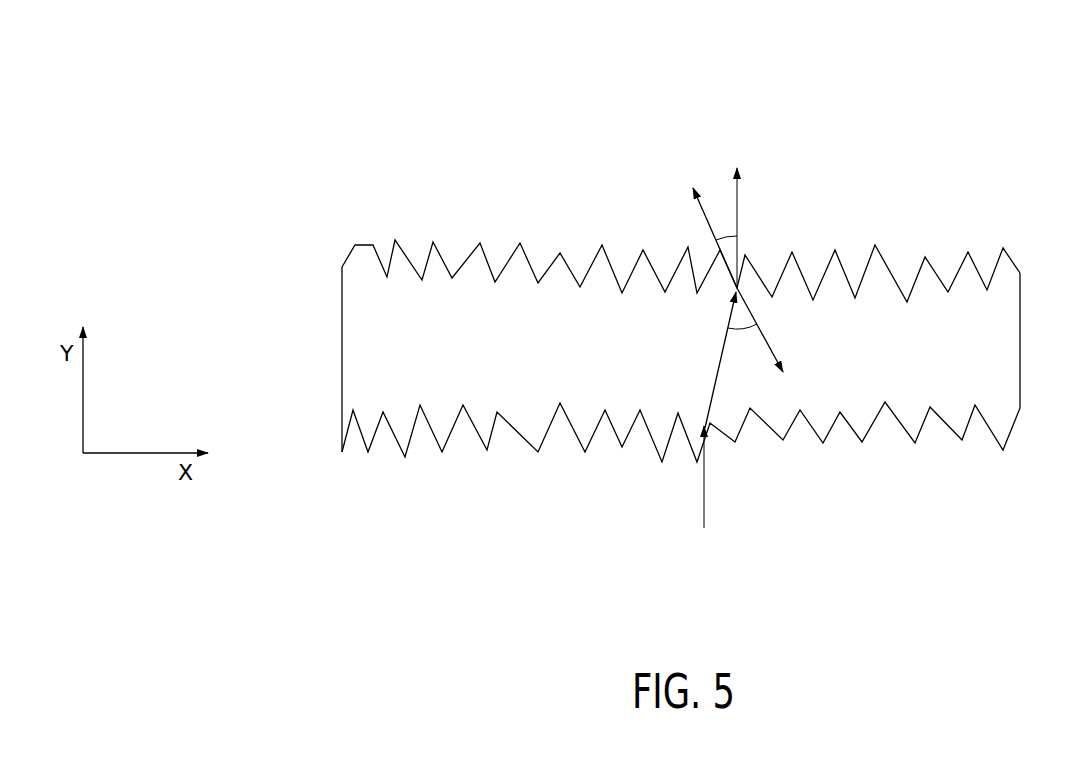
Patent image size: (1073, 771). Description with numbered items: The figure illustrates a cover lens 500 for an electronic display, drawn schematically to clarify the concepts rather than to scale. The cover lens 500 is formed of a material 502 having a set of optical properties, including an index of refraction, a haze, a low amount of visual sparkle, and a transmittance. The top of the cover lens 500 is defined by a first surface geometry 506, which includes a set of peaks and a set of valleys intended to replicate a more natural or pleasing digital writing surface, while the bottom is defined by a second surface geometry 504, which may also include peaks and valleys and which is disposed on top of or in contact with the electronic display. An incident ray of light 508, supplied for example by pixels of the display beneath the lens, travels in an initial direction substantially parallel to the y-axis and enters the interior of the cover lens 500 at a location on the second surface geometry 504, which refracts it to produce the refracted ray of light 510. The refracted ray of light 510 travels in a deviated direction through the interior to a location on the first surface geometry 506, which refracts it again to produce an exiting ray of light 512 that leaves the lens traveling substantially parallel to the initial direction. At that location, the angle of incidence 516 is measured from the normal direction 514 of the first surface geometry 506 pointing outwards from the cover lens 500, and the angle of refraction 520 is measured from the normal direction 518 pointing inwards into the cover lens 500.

The cover lens 500 is at (702, 261).
The material 502 is at (1021, 343).
The second surface geometry 504 is at (947, 427).
The first surface geometry 506 is at (882, 258).
The incident ray of light 508 is at (705, 490).
The refracted ray of light 510 is at (717, 365).
The exiting ray of light 512 is at (738, 222).
The normal direction 514 is at (712, 228).
The angle of incidence 516 is at (730, 233).
The normal direction 518 is at (775, 347).
The angle of refraction 520 is at (745, 333).